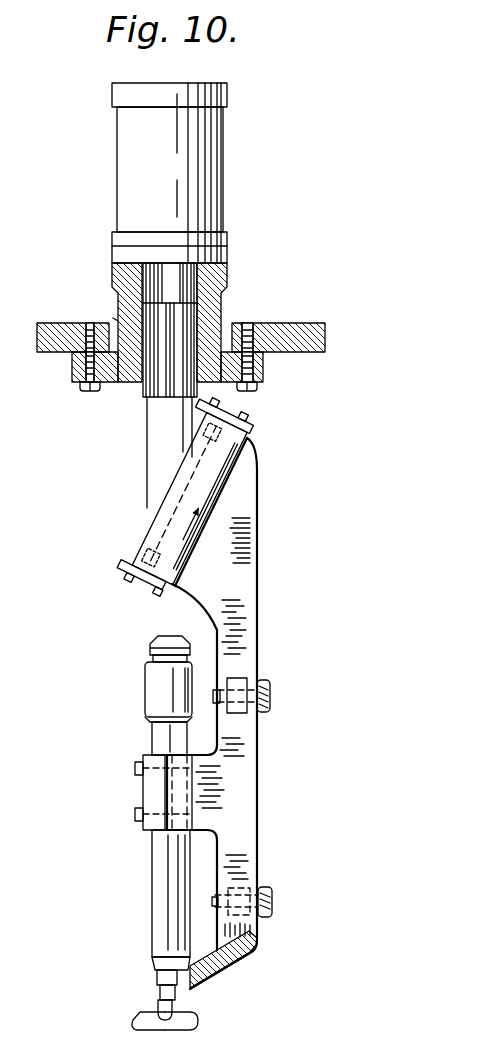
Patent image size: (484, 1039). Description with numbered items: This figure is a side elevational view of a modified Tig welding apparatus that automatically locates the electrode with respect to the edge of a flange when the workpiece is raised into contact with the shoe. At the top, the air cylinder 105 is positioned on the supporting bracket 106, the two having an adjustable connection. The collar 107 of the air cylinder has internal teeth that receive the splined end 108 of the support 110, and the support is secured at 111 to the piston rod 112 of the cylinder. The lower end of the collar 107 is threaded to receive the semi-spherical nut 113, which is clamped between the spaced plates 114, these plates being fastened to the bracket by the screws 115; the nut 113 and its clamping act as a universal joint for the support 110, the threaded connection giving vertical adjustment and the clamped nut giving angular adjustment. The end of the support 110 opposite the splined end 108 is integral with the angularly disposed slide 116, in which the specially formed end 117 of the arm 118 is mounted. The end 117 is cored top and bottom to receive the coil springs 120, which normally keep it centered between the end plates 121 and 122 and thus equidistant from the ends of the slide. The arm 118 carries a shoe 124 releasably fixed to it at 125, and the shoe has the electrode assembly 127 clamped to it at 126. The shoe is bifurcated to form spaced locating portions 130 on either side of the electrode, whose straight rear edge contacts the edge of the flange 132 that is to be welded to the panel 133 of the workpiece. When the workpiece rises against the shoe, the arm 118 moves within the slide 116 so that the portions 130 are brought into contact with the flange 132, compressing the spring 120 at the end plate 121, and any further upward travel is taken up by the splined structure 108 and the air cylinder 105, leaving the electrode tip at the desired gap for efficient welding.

The air cylinder 105 is at (221, 164).
The supporting bracket 106 is at (292, 326).
The collar 107 is at (224, 300).
The splined end 108 is at (140, 393).
The support 110 is at (157, 452).
The securing point 111 is at (133, 313).
The piston rod 112 is at (173, 297).
The semi-spherical nut 113 is at (116, 383).
The spaced plates 114 is at (264, 372).
The screws 115 is at (80, 386).
The slide 116 is at (164, 488).
The end of the arm 117 is at (152, 527).
The arm 118 is at (259, 632).
The coil springs 120 is at (236, 433).
The end plate 121 is at (248, 427).
The end plate 122 is at (124, 590).
The shoe 124 is at (240, 800).
The releasable fixing 125 is at (238, 678).
The clamp 126 is at (143, 787).
The electrode assembly 127 is at (158, 900).
The locating portions 130 is at (157, 1016).
The flange 132 is at (180, 1011).
The panel 133 is at (140, 1017).